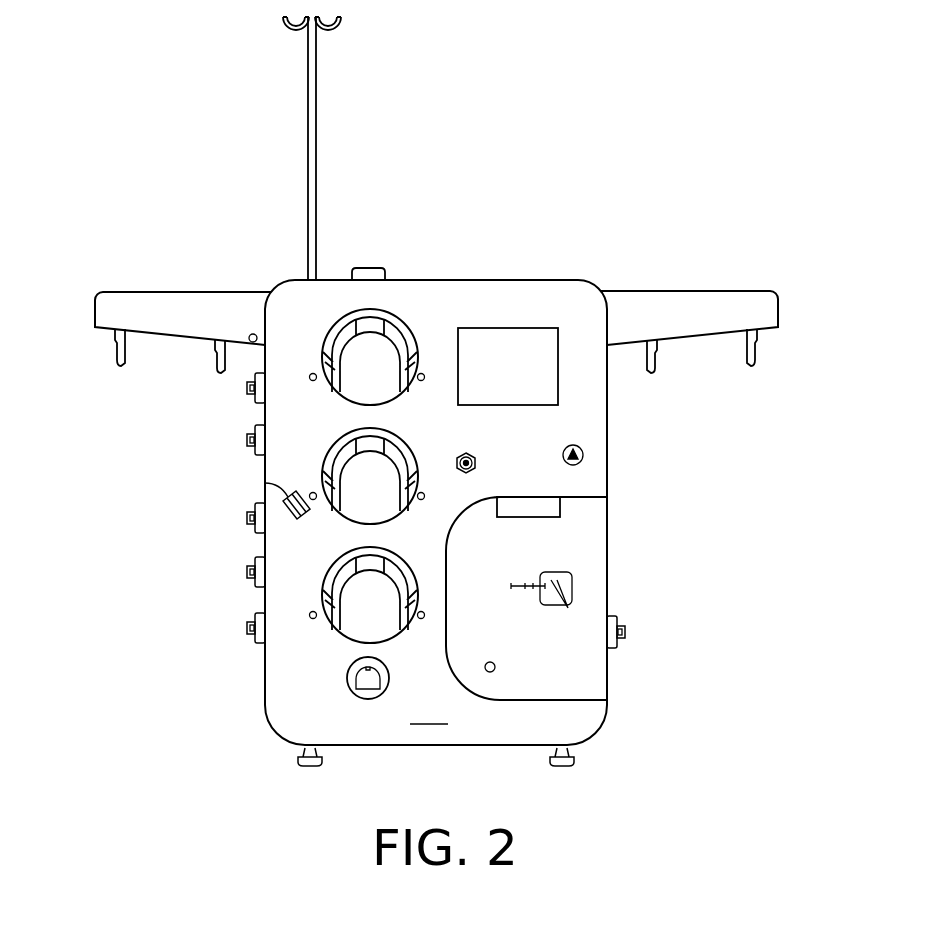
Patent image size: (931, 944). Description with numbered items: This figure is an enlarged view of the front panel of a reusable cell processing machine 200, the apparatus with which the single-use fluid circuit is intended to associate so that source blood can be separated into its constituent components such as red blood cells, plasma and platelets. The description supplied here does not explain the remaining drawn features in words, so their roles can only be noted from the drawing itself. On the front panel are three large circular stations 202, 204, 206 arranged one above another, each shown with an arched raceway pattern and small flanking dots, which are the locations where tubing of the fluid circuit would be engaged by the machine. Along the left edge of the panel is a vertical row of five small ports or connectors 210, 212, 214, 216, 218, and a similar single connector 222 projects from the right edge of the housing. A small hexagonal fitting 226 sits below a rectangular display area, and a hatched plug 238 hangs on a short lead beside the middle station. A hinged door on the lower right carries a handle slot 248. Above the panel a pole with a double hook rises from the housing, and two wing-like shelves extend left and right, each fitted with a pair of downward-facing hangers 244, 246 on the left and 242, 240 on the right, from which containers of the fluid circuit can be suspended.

The cell processing machine 200 is at (680, 581).
The first peristaltic pump 202 is at (378, 348).
The second peristaltic pump 204 is at (370, 462).
The third peristaltic pump 206 is at (357, 620).
The first connector port 210 is at (247, 386).
The second connector port 212 is at (247, 439).
The third connector port 214 is at (247, 517).
The fourth connector port 216 is at (247, 571).
The fifth connector port 218 is at (247, 627).
The side connector port 222 is at (626, 632).
The pressure sensor connector 226 is at (470, 452).
The sensor plug 238 is at (265, 483).
The right outer hanger hook 240 is at (757, 349).
The right inner hanger hook 242 is at (657, 355).
The left outer hanger hook 244 is at (115, 352).
The left inner hanger hook 246 is at (215, 357).
The door handle slot 248 is at (560, 505).